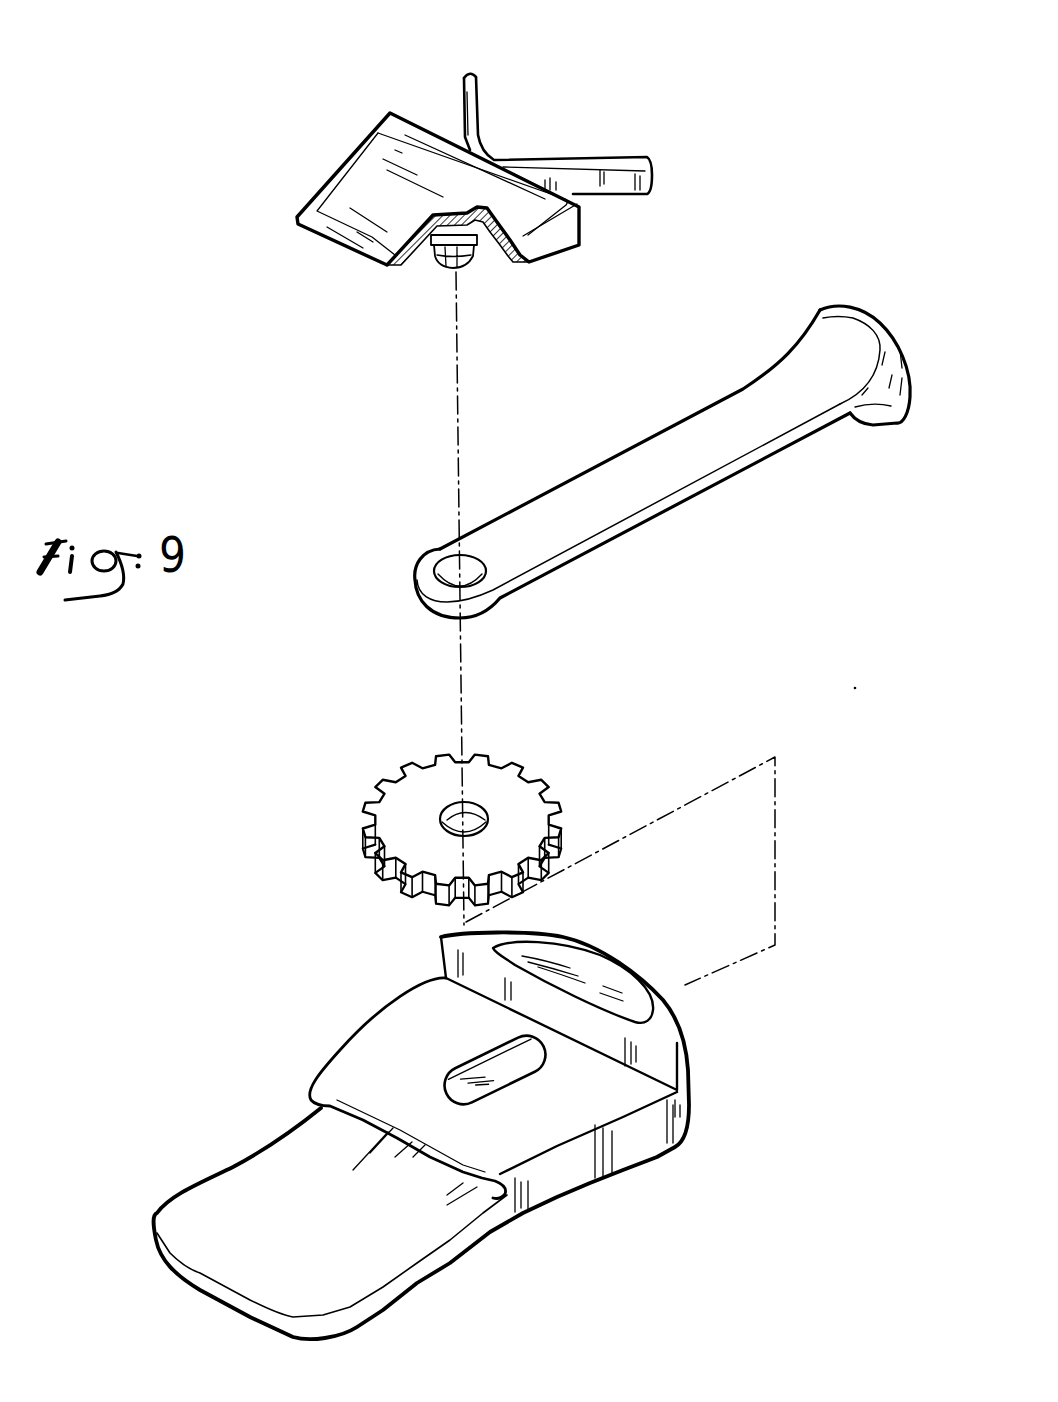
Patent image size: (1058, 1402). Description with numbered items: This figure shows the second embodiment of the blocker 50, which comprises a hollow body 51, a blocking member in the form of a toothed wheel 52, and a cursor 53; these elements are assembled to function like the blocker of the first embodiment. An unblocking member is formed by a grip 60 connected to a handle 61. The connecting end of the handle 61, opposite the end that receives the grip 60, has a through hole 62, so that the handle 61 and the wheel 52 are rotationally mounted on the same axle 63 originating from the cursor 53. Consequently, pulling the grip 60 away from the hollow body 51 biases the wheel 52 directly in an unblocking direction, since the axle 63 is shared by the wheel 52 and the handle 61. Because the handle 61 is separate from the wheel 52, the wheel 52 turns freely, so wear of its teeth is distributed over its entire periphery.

The blocker 50 is at (541, 117).
The hollow body 51 is at (566, 1188).
The wheel 52 is at (410, 852).
The cursor 53 is at (571, 250).
The grip 60 is at (876, 312).
The handle 61 is at (675, 442).
The through hole 62 is at (443, 568).
The axle 63 is at (447, 273).